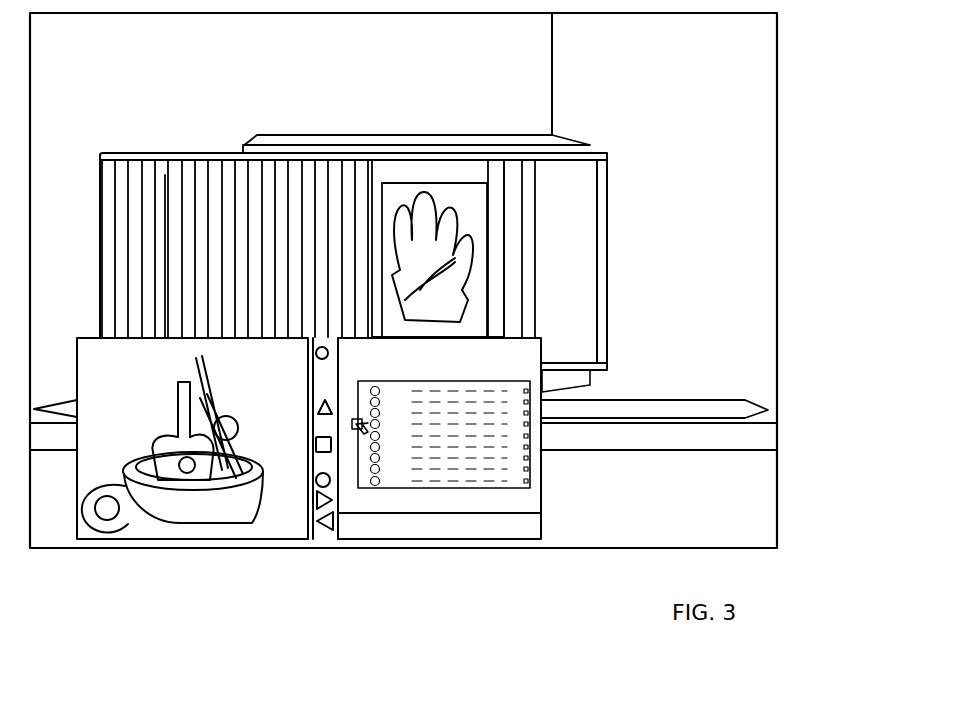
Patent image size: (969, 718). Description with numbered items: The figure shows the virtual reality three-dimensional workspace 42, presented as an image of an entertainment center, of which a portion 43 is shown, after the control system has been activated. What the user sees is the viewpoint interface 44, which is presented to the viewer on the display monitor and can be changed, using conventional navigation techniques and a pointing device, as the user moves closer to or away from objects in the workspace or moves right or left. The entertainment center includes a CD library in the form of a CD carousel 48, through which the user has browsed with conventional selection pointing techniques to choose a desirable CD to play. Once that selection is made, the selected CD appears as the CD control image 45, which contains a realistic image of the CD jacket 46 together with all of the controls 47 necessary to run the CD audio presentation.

The workspace 42 is at (777, 240).
The portion of the entertainment center 43 is at (550, 53).
The viewpoint interface 44 is at (527, 536).
The CD control image 45 is at (318, 536).
The CD jacket 46 is at (108, 514).
The controls 47 is at (333, 530).
The CD carousel 48 is at (567, 148).